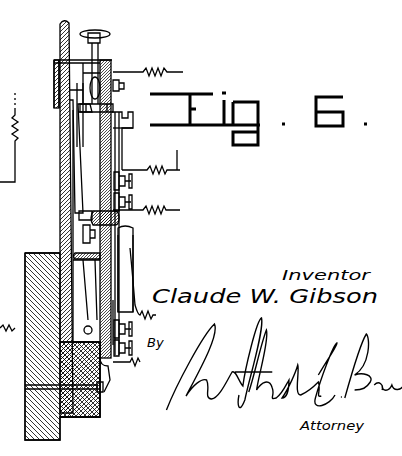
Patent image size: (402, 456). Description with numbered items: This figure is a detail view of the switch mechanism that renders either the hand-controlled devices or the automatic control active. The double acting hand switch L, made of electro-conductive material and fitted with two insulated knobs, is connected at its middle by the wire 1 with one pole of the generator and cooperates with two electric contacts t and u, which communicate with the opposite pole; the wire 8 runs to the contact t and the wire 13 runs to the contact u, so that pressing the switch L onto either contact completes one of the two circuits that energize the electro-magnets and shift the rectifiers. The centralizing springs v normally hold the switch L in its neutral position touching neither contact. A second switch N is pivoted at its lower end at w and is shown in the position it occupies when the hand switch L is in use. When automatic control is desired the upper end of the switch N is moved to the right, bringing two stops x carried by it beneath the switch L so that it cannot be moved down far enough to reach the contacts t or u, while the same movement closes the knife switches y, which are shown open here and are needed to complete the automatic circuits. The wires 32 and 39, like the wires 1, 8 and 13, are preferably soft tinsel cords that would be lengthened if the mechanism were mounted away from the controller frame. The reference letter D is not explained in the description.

The switch N is at (62, 42).
The double acting hand switch L is at (106, 52).
The dial / indicator D is at (352, 0).
The wire 1 is at (167, 72).
The wire 8 is at (133, 128).
The wire 13 is at (177, 152).
The wire 32 is at (128, 247).
The wire 39 is at (120, 258).
The centralizing springs v is at (9, 200).
The stops x is at (62, 120).
The electric contact u is at (97, 128).
The electric contact t is at (65, 160).
The knife switches y is at (82, 217).
The pivot w is at (103, 366).